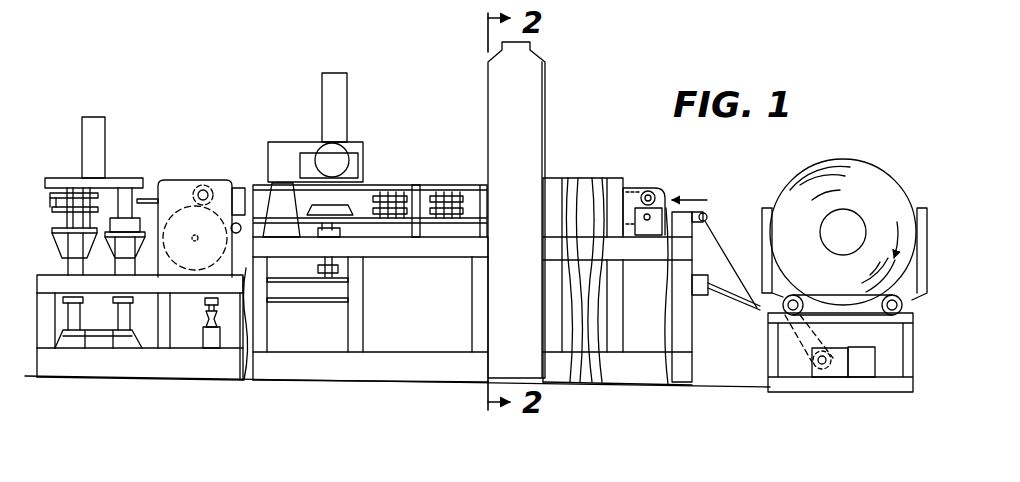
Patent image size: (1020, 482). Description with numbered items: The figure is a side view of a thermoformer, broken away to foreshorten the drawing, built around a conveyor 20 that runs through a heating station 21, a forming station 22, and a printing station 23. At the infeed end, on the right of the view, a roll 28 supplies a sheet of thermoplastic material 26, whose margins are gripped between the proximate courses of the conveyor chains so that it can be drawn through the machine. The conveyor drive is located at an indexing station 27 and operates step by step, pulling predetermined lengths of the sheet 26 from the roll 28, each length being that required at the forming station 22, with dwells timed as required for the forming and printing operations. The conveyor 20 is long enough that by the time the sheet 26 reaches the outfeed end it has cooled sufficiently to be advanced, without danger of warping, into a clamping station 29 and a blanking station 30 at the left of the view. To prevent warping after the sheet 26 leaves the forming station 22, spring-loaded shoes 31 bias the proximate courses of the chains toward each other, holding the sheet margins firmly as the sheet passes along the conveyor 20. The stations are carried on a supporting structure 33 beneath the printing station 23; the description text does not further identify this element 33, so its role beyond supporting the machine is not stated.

The conveyor 20 is at (220, 167).
The heating station 21 is at (589, 160).
The forming station 22 is at (550, 129).
The printing station 23 is at (373, 154).
The sheet of thermoplastic material 26 is at (717, 247).
The indexing station 27 is at (185, 184).
The roll 28 is at (877, 156).
The clamping station 29 is at (124, 164).
The blanking station 30 is at (63, 160).
The spring-loaded shoes 31 is at (403, 197).
The machine frame 33 is at (443, 253).